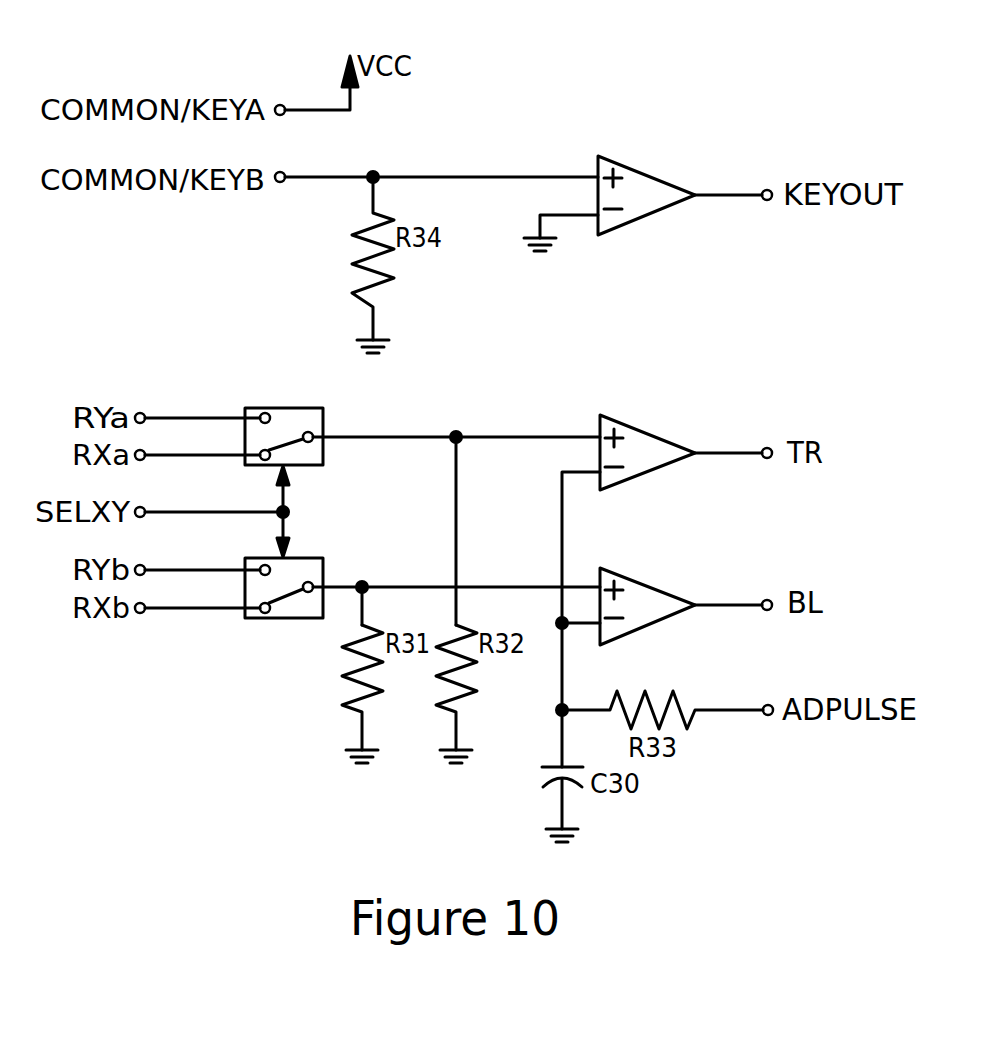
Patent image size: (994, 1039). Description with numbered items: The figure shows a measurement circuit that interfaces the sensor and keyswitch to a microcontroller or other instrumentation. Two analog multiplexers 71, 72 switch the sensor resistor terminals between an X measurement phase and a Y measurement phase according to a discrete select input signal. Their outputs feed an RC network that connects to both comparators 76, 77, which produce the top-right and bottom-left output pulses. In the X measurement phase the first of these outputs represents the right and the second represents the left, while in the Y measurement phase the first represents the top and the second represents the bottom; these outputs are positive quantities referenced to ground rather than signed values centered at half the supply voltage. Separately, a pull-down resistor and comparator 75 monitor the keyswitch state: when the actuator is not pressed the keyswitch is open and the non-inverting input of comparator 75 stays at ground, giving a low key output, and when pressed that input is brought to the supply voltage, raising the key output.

The analog multiplexer 71 is at (325, 494).
The analog multiplexer 72 is at (326, 642).
The comparator 75 is at (683, 245).
The comparator 76 is at (687, 496).
The comparator 77 is at (685, 652).